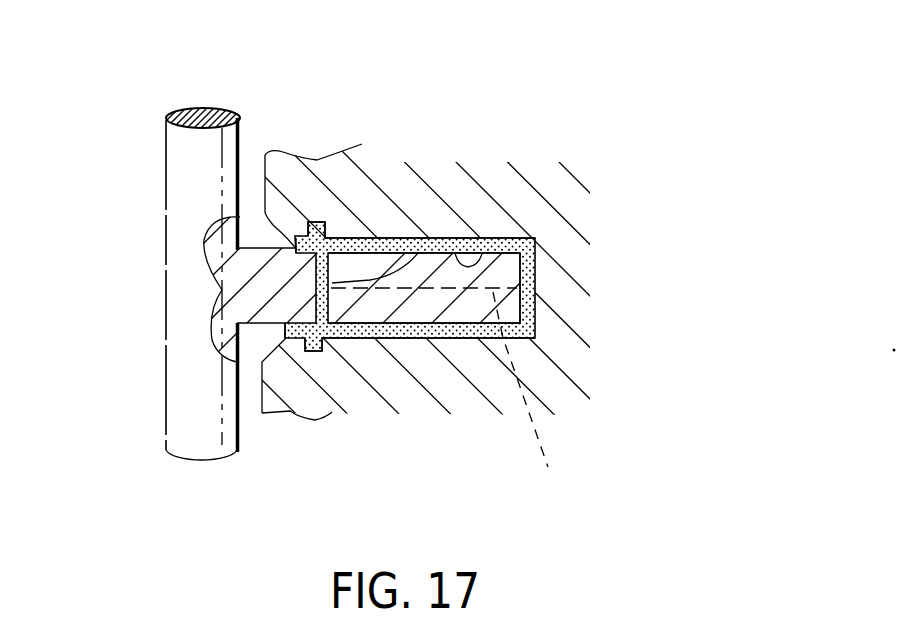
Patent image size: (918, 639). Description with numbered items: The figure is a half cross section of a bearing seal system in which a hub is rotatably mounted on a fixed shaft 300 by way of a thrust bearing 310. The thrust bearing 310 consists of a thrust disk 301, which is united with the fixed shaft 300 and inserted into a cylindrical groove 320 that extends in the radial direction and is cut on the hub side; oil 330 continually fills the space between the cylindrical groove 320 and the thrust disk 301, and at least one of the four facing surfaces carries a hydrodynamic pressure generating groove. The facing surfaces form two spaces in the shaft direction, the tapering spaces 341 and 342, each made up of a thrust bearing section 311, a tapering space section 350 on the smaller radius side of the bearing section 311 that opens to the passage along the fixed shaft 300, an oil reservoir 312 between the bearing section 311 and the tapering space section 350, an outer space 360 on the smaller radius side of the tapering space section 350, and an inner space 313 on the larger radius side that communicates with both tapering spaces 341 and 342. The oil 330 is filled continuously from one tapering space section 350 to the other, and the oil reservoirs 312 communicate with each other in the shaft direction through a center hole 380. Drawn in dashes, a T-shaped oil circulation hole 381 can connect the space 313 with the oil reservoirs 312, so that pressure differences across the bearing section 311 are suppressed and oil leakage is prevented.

The fixed shaft 300 is at (190, 308).
The thrust disk 301 is at (495, 253).
The thrust bearing 310 is at (542, 190).
The thrust bearing section 311 is at (492, 216).
The oil reservoir 312 is at (326, 190).
The outer space 313 is at (563, 292).
The cylindrical groove 320 is at (537, 238).
The oil 330 is at (522, 340).
The tapering space 341 is at (407, 240).
The tapering space 342 is at (390, 340).
The tapering space section 350 is at (287, 192).
The outer space 360 is at (253, 215).
The center hole 380 is at (428, 240).
The oil circulation hole 381 is at (533, 398).